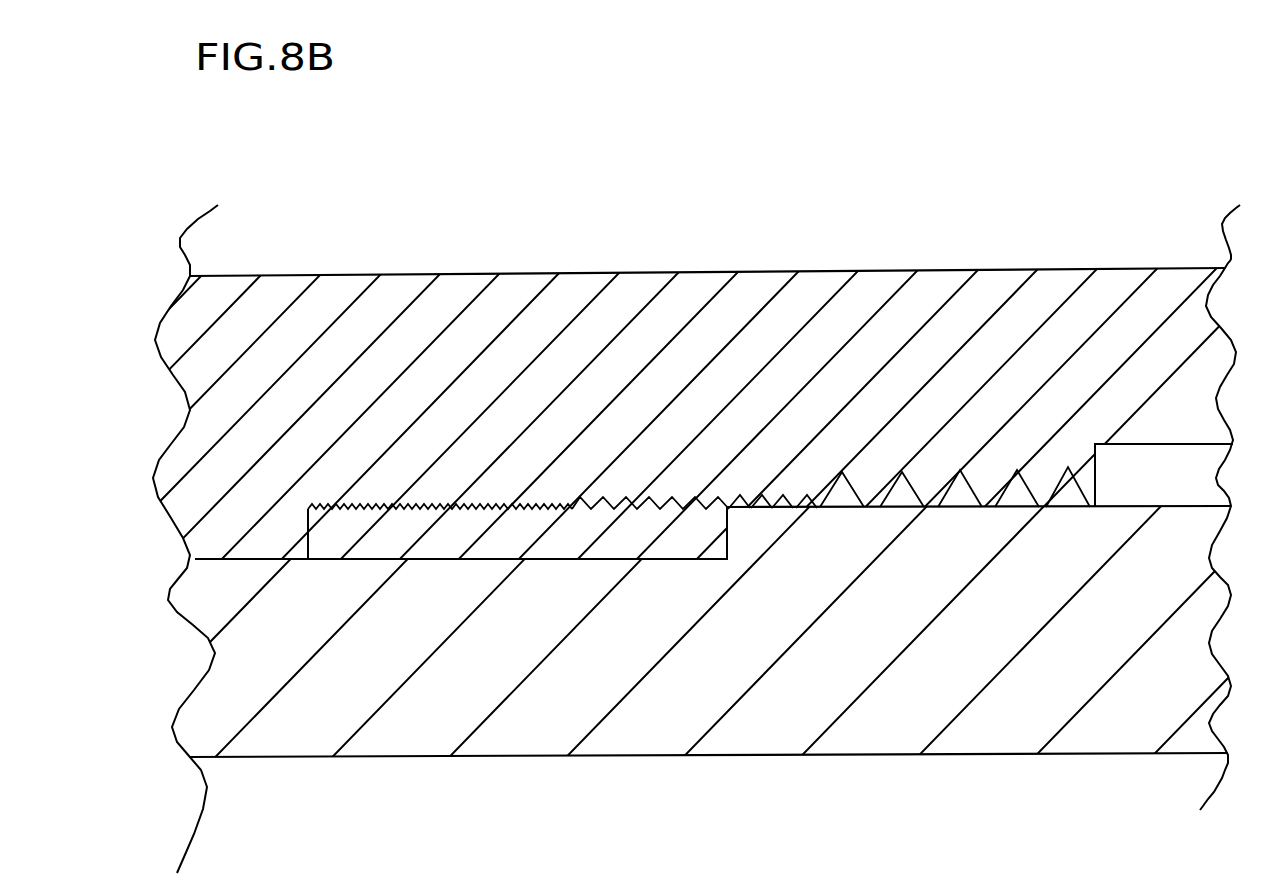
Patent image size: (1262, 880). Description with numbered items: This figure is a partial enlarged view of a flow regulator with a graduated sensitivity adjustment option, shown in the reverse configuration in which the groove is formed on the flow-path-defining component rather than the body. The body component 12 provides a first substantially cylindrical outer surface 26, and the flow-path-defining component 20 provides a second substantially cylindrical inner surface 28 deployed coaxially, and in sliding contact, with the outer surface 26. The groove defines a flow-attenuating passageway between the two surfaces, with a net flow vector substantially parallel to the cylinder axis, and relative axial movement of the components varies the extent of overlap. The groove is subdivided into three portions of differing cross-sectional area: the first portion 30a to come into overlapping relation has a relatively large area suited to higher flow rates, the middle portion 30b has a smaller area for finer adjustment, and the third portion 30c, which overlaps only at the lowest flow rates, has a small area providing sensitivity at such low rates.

The body component 12 is at (815, 687).
The flow-path-defining component 20 is at (662, 358).
The first substantially cylindrical outer surface 26 is at (1148, 492).
The second substantially cylindrical inner surface 28 is at (412, 512).
The first portion of groove 30a is at (1012, 497).
The middle portion of groove 30b is at (658, 502).
The third portion of groove 30c is at (337, 510).